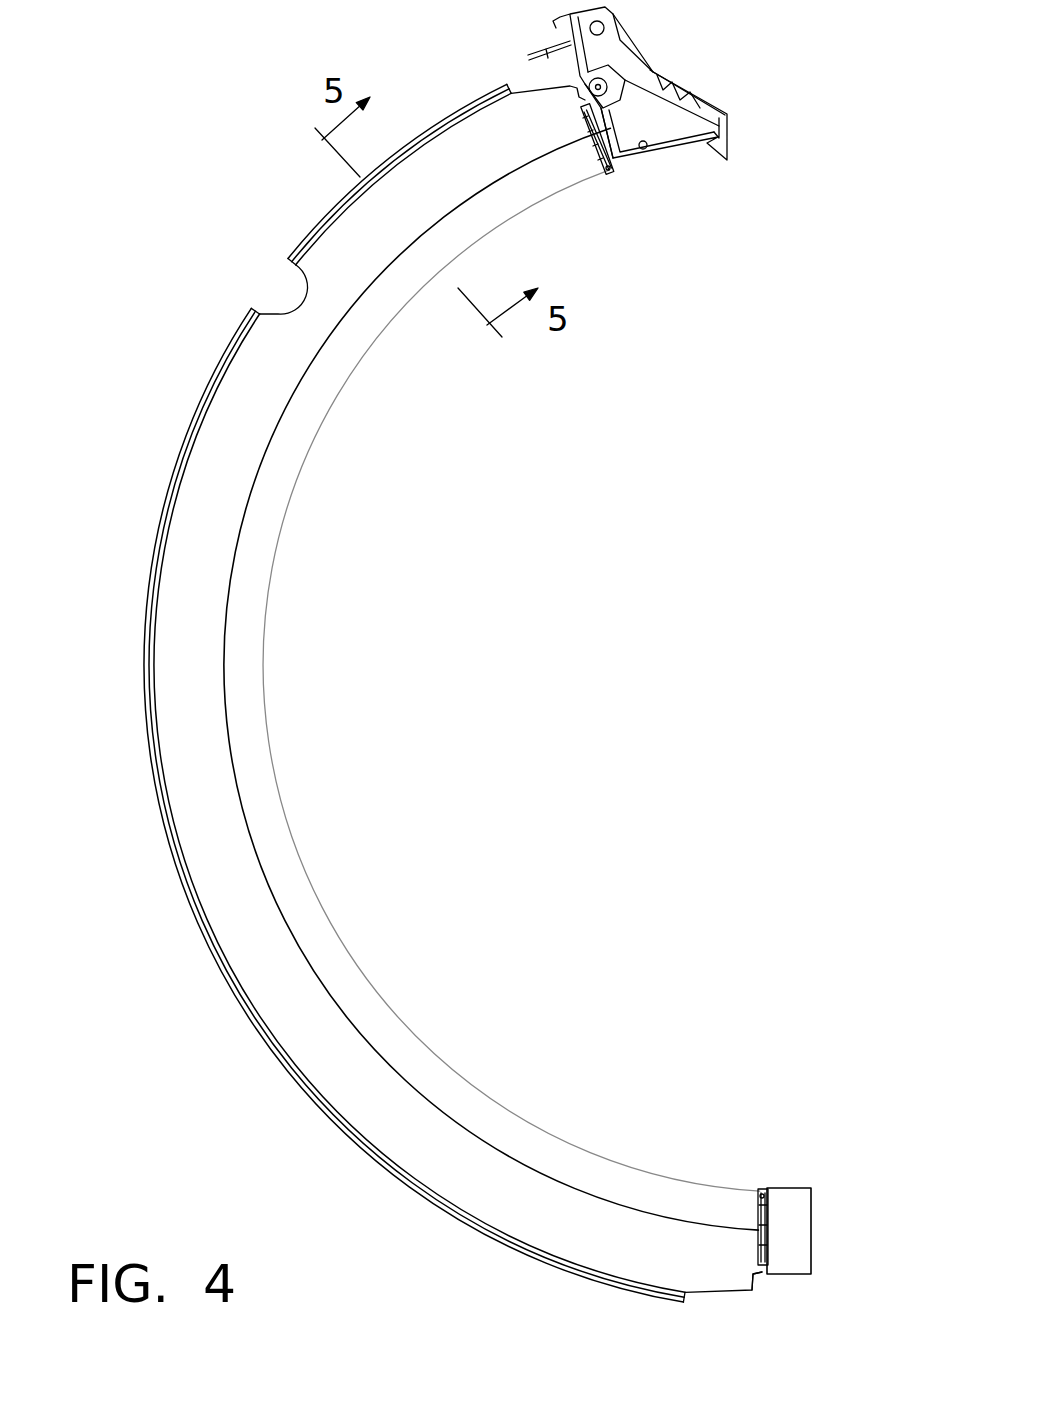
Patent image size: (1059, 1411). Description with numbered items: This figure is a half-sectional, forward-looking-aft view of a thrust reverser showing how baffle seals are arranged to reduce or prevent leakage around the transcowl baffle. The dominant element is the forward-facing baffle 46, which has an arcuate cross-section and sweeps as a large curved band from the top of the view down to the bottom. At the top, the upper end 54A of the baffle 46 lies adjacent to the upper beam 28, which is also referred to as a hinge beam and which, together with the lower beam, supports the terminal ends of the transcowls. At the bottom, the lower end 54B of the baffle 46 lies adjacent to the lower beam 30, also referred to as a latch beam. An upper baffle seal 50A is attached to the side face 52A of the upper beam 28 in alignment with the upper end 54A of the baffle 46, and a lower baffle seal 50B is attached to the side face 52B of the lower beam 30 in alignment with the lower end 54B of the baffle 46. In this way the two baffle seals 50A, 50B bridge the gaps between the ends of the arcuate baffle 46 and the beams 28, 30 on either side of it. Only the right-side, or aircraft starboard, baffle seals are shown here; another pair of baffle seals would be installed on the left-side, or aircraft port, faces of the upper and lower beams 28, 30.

The upper beam 28 is at (633, 82).
The lower beam 30 is at (795, 1217).
The baffle 46 is at (204, 422).
The upper baffle seal 50A is at (603, 176).
The lower baffle seal 50B is at (758, 1189).
The side face of the upper beam 52A is at (610, 117).
The side face of the lower beam 52B is at (772, 1252).
The upper end of the baffle 54A is at (483, 104).
The lower end of the baffle 54B is at (483, 1215).